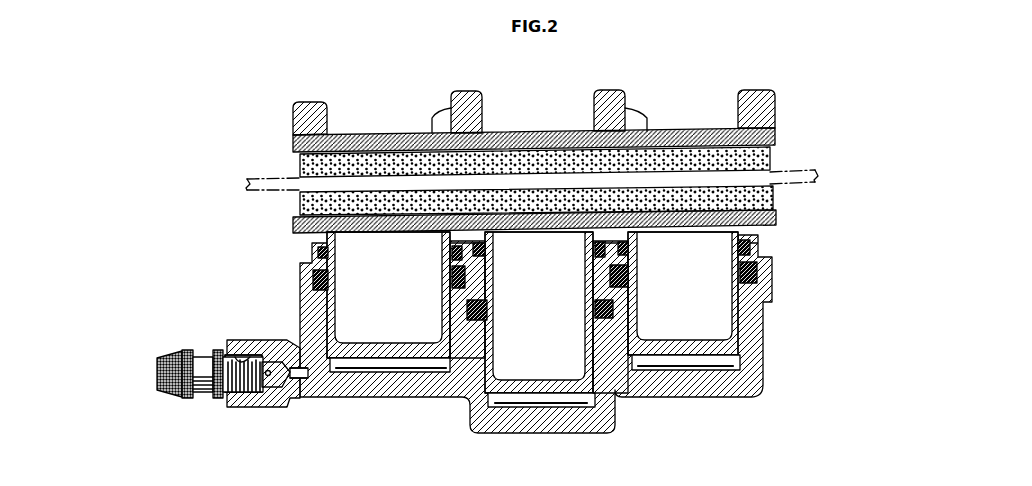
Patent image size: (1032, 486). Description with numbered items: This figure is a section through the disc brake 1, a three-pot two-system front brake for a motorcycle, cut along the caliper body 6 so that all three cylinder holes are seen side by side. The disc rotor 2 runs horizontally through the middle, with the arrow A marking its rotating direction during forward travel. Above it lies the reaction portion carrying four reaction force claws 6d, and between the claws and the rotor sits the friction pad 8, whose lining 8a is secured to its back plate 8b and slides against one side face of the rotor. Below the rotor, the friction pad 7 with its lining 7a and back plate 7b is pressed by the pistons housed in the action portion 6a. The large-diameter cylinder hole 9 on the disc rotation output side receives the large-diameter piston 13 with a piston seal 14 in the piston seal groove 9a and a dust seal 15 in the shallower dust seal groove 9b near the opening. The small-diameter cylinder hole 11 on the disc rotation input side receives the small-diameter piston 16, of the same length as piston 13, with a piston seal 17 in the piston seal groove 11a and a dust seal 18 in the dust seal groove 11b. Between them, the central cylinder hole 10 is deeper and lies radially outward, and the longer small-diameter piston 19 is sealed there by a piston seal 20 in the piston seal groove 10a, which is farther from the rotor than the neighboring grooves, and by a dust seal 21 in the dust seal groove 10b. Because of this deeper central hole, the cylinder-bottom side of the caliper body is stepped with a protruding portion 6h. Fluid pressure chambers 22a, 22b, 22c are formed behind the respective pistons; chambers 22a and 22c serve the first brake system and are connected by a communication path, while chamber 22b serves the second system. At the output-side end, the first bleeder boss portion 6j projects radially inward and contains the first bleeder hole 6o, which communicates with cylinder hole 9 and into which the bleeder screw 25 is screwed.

The disc brake 1 is at (538, 70).
The disc rotor 2 is at (810, 182).
The caliper body 6 is at (517, 342).
The action portion 6a is at (705, 392).
The reaction force claws 6d is at (313, 112).
The protruding portion 6h is at (472, 430).
The first bleeder boss portion 6j is at (261, 408).
The first bleeder hole 6o is at (248, 350).
The friction pad 7 is at (572, 209).
The lining 7a is at (775, 196).
The back plate 7b is at (777, 216).
The friction pad 8 is at (496, 152).
The lining 8a is at (300, 166).
The back plate 8b is at (293, 143).
The cylinder hole 9 is at (457, 375).
The piston seal groove 9a is at (451, 284).
The dust seal groove 9b is at (451, 251).
The cylinder hole 10 is at (590, 413).
The piston seal groove 10a is at (595, 312).
The dust seal groove 10b is at (595, 248).
The cylinder hole 11 is at (741, 313).
The piston seal groove 11a is at (629, 278).
The dust seal groove 11b is at (629, 250).
The large-diameter piston 13 is at (326, 322).
The piston seal 14 is at (313, 282).
The dust seal 15 is at (318, 252).
The small-diameter piston 16 is at (682, 342).
The piston seal 17 is at (760, 270).
The dust seal 18 is at (752, 247).
The small-diameter piston 19 is at (537, 386).
The piston seal 20 is at (489, 313).
The dust seal 21 is at (488, 250).
The fluid pressure chamber 22a is at (382, 366).
The fluid pressure chamber 22b is at (547, 403).
The fluid pressure chamber 22c is at (672, 380).
The bleeder screw 25 is at (203, 355).